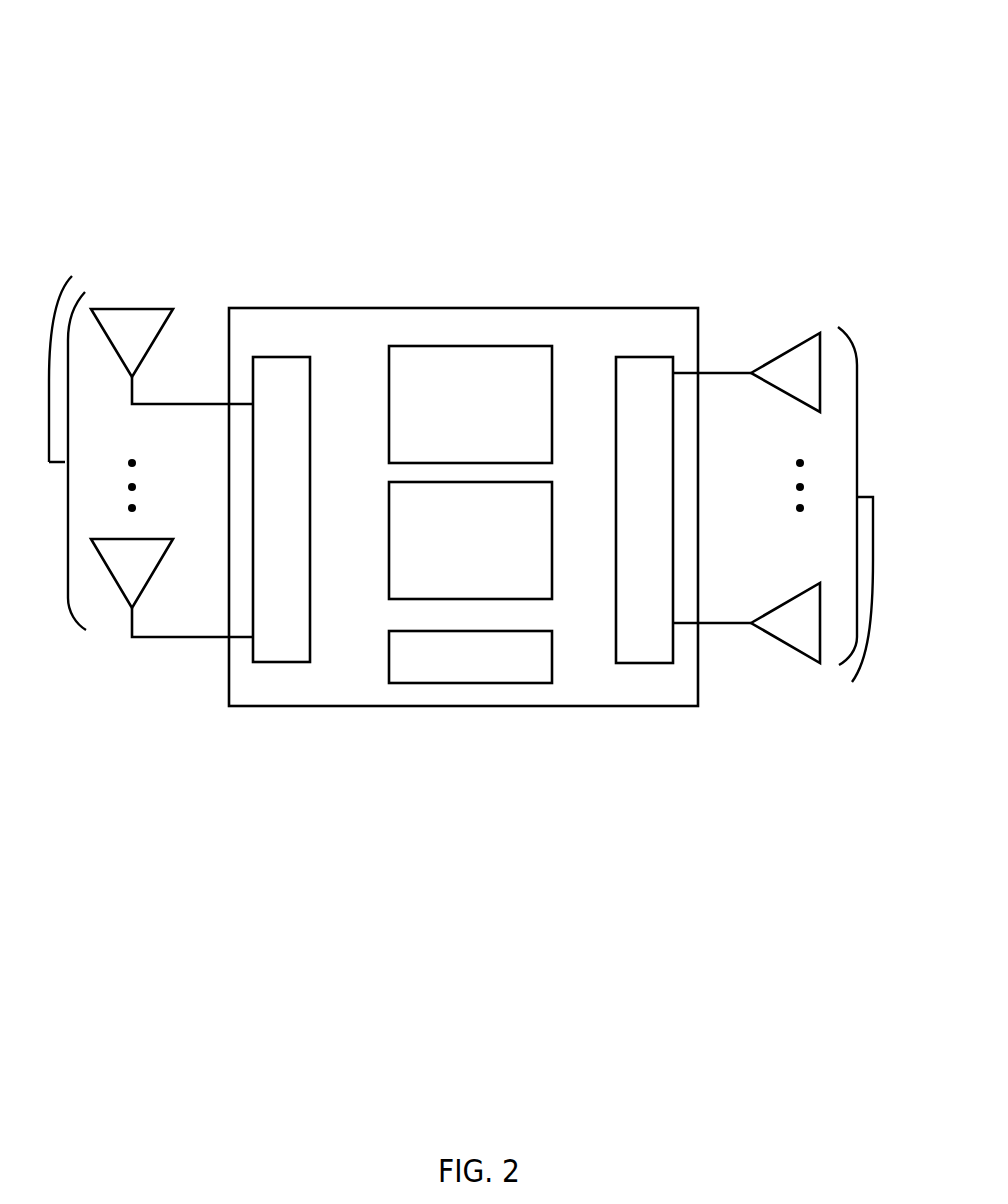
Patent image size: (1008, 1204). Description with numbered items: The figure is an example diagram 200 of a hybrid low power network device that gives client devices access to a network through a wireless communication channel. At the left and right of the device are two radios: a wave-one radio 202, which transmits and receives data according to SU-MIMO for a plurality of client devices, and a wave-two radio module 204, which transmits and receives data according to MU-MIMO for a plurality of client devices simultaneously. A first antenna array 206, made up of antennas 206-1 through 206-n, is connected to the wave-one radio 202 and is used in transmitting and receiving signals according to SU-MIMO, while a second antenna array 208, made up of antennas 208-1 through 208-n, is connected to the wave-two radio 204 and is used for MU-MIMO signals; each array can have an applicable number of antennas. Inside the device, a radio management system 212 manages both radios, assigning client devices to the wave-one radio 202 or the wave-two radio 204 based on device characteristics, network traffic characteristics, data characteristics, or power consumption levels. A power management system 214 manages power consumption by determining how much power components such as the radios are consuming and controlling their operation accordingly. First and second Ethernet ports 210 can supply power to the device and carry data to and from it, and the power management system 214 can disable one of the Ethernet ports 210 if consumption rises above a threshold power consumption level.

The diagram 200 is at (730, 59).
The wave 1 radio 202 is at (281, 509).
The wave 2 radio module 204 is at (644, 510).
The first antenna array 206 is at (86, 439).
The antenna 206-1 is at (157, 337).
The antenna 206-n is at (113, 577).
The second antenna array 208 is at (838, 517).
The antenna 208-1 is at (790, 352).
The antenna 208-n is at (785, 605).
The first and second Ethernet ports 210 is at (470, 657).
The radio management system 212 is at (470, 404).
The power management system 214 is at (470, 540).